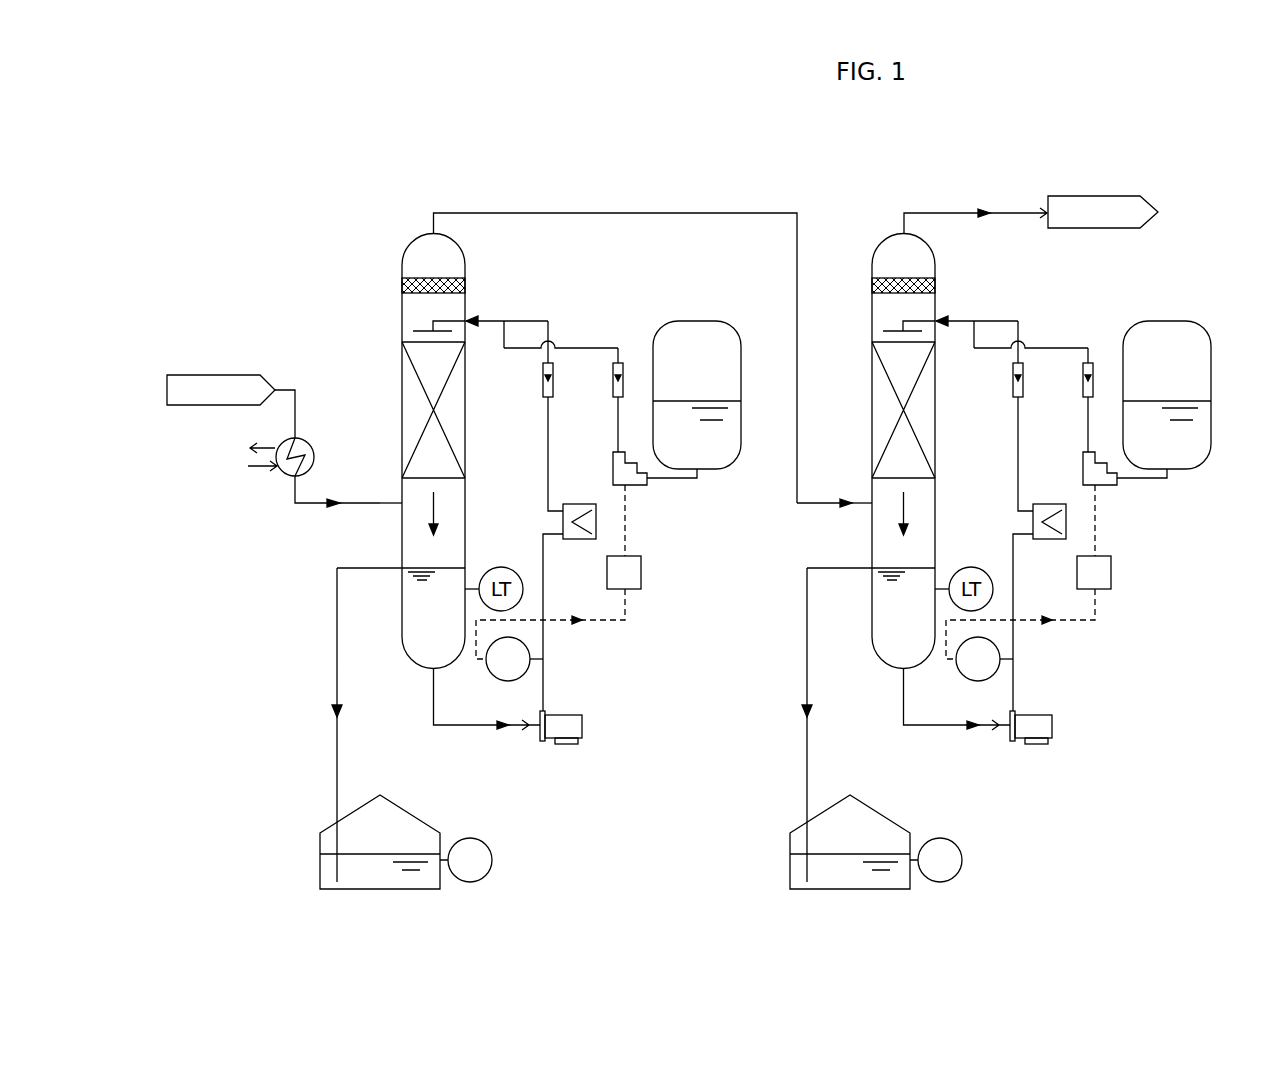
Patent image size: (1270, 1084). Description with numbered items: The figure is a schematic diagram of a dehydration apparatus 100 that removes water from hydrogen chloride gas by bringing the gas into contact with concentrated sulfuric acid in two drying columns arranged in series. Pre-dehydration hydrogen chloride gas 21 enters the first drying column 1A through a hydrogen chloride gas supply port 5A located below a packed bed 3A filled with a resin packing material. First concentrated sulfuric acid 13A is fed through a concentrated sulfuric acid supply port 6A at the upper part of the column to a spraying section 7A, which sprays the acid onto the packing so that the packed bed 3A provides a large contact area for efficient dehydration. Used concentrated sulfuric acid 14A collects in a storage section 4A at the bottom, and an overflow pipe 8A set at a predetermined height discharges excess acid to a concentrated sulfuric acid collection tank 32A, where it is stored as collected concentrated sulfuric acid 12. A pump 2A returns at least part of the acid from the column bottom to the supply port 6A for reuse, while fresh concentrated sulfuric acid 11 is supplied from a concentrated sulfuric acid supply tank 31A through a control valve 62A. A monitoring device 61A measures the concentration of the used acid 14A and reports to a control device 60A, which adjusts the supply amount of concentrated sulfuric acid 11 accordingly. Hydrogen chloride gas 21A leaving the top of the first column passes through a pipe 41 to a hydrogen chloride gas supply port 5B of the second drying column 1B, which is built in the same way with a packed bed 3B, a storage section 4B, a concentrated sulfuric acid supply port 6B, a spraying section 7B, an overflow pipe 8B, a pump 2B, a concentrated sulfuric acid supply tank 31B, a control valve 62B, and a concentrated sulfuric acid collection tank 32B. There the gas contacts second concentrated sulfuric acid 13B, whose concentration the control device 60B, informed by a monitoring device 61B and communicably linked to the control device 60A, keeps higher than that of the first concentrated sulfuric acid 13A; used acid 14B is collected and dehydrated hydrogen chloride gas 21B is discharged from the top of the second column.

The dehydration apparatus 100 is at (1097, 149).
The first drying column 1A is at (468, 263).
The second drying column 1B is at (927, 436).
The pump 2A is at (583, 725).
The pump 2B is at (1053, 721).
The packed bed 3A is at (460, 424).
The packed bed 3B is at (927, 410).
The storage section 4A is at (418, 657).
The storage section 4B is at (885, 661).
The hydrogen chloride gas supply port 5A is at (402, 503).
The hydrogen chloride gas supply port 5B is at (847, 490).
The concentrated sulfuric acid supply port 6A is at (468, 319).
The concentrated sulfuric acid supply port 6B is at (927, 295).
The spraying section 7A is at (413, 331).
The spraying section 7B is at (877, 315).
The overflow pipe 8A is at (402, 568).
The overflow pipe 8B is at (871, 584).
The concentrated sulfuric acid 11 is at (733, 452).
The collected concentrated sulfuric acid 12 is at (388, 889).
The first concentrated sulfuric acid 13A is at (492, 321).
The second concentrated sulfuric acid 13B is at (1014, 501).
The concentrated sulfuric acid 14A is at (438, 513).
The concentrated sulfuric acid 14B is at (878, 683).
The pre-dehydration hydrogen chloride gas 21 is at (322, 506).
The hydrogen chloride gas 21A is at (838, 506).
The hydrogen chloride gas 21B is at (980, 213).
The concentrated sulfuric acid supply tank 31A is at (695, 322).
The concentrated sulfuric acid supply tank 31B is at (1172, 381).
The concentrated sulfuric acid collection tank 32A is at (318, 846).
The concentrated sulfuric acid collection tank 32B is at (845, 842).
The pipe 41 is at (597, 213).
The control device 60A is at (641, 578).
The control device 60B is at (1057, 572).
The monitoring device 61A is at (496, 681).
The monitoring device 61B is at (961, 671).
The control valve 62A is at (632, 486).
The control valve 62B is at (1121, 480).